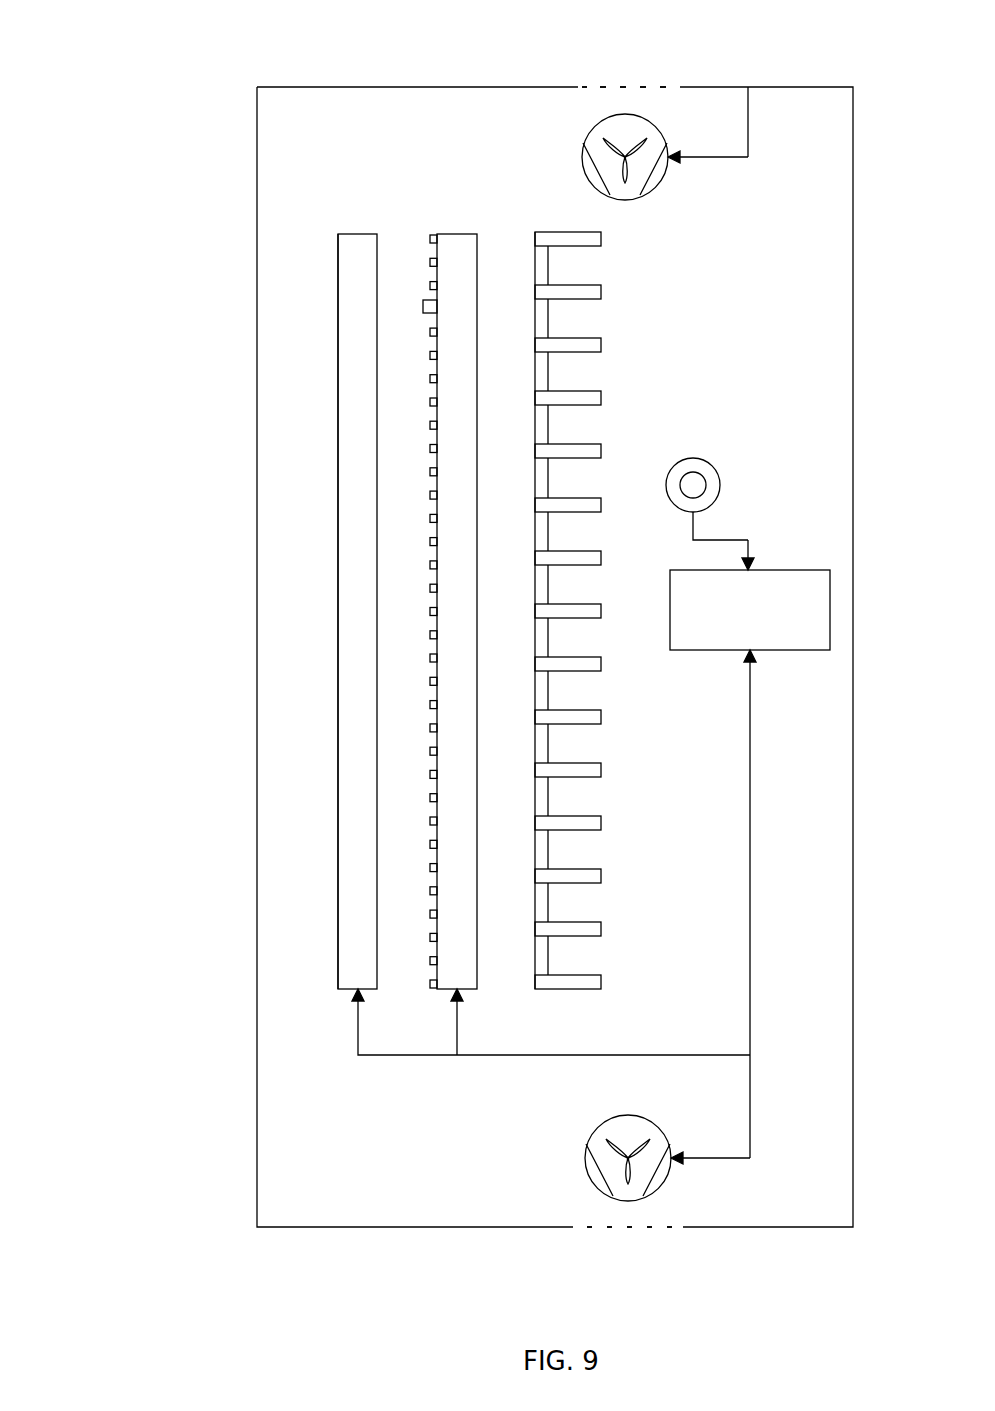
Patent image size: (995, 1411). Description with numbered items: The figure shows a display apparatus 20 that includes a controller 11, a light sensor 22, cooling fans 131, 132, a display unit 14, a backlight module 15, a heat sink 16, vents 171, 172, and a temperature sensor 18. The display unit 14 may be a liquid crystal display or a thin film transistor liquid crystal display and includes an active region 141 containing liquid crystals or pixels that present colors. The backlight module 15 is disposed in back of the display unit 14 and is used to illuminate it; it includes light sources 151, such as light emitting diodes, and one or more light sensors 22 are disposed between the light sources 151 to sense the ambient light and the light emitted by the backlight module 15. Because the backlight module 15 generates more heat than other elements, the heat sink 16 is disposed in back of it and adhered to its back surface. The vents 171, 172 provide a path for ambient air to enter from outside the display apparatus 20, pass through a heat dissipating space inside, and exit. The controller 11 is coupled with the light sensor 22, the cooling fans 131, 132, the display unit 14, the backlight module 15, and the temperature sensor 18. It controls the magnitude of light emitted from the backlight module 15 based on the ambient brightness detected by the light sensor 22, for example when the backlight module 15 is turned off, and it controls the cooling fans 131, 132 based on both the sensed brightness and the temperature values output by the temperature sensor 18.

The display apparatus 20 is at (76, 26).
The controller 11 is at (766, 646).
The display unit 14 is at (332, 441).
The active region 141 is at (338, 526).
The backlight module 15 is at (477, 362).
The light sources 151 is at (430, 284).
The light sensor 22 is at (423, 305).
The heat sink 16 is at (535, 485).
The temperature sensor 18 is at (694, 458).
The cooling fan 131 is at (582, 174).
The cooling fan 132 is at (585, 1168).
The vent 171 is at (598, 83).
The vent 172 is at (597, 1233).